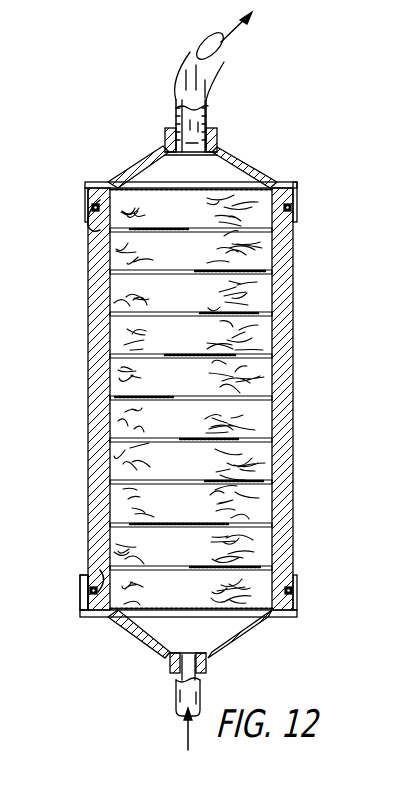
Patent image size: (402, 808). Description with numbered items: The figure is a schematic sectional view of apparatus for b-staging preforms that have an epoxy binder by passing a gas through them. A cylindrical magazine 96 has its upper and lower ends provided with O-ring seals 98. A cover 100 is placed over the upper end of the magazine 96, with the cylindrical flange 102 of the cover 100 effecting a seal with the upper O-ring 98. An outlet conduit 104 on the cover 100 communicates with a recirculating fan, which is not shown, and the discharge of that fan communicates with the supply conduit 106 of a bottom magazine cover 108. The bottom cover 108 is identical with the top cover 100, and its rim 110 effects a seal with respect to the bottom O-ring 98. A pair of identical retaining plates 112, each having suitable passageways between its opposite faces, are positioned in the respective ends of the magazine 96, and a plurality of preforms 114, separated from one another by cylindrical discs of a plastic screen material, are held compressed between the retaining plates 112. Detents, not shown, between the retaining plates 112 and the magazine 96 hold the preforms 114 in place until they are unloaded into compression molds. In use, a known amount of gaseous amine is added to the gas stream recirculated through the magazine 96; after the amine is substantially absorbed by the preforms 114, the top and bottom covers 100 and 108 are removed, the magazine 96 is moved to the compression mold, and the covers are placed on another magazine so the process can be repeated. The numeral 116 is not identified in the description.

The cylindrical magazine 96 is at (89, 346).
The O-ring seals 98 is at (98, 230).
The cover 100 is at (162, 183).
The cylindrical flange 102 is at (92, 208).
The outlet conduit 104 is at (182, 52).
The supply conduit 106 is at (177, 692).
The bottom magazine cover 108 is at (140, 635).
The rim 110 is at (84, 578).
The retaining plates 112 is at (148, 185).
The preforms 114 is at (163, 253).
The perforated trays 116 is at (162, 482).